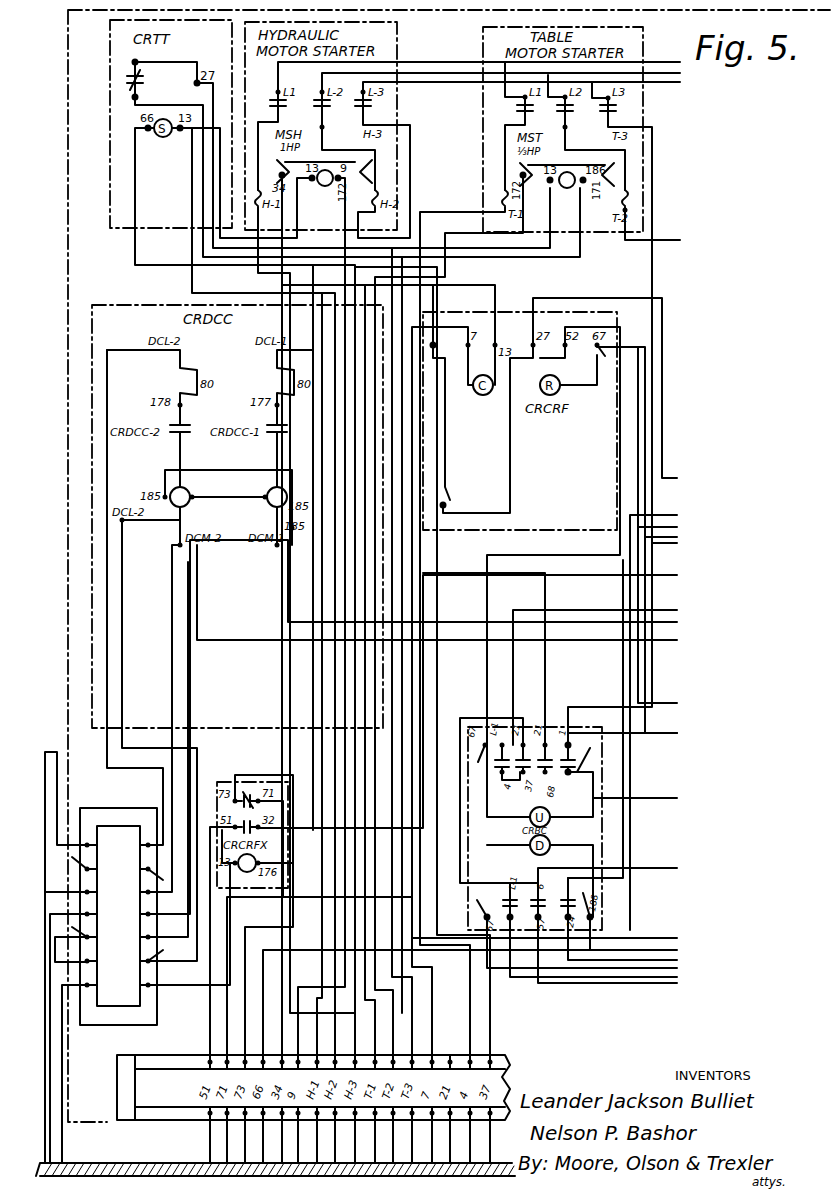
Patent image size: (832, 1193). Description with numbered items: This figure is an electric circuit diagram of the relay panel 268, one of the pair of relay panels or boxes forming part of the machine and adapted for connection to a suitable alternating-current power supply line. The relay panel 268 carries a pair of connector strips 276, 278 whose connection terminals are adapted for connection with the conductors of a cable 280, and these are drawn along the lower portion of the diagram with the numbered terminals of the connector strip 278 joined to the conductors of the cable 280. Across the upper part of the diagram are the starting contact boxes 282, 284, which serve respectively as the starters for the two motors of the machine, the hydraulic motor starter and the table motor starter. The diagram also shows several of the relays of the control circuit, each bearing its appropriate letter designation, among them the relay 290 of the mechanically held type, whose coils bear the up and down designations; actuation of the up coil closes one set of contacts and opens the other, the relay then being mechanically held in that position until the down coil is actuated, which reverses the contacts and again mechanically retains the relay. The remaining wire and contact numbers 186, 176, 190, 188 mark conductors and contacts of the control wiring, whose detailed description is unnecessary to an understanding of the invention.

The relay panel 268 is at (68, 40).
The connector strip 276 is at (111, 820).
The connector strip 278 is at (502, 1062).
The cable 280 is at (112, 1172).
The starting contact box 282 is at (633, 112).
The starting contact box 284 is at (378, 108).
The relay 290 is at (580, 828).
The conductor 186 is at (353, 159).
The conductor 176 is at (407, 399).
The contact 190 is at (582, 757).
The contact 188 is at (535, 906).